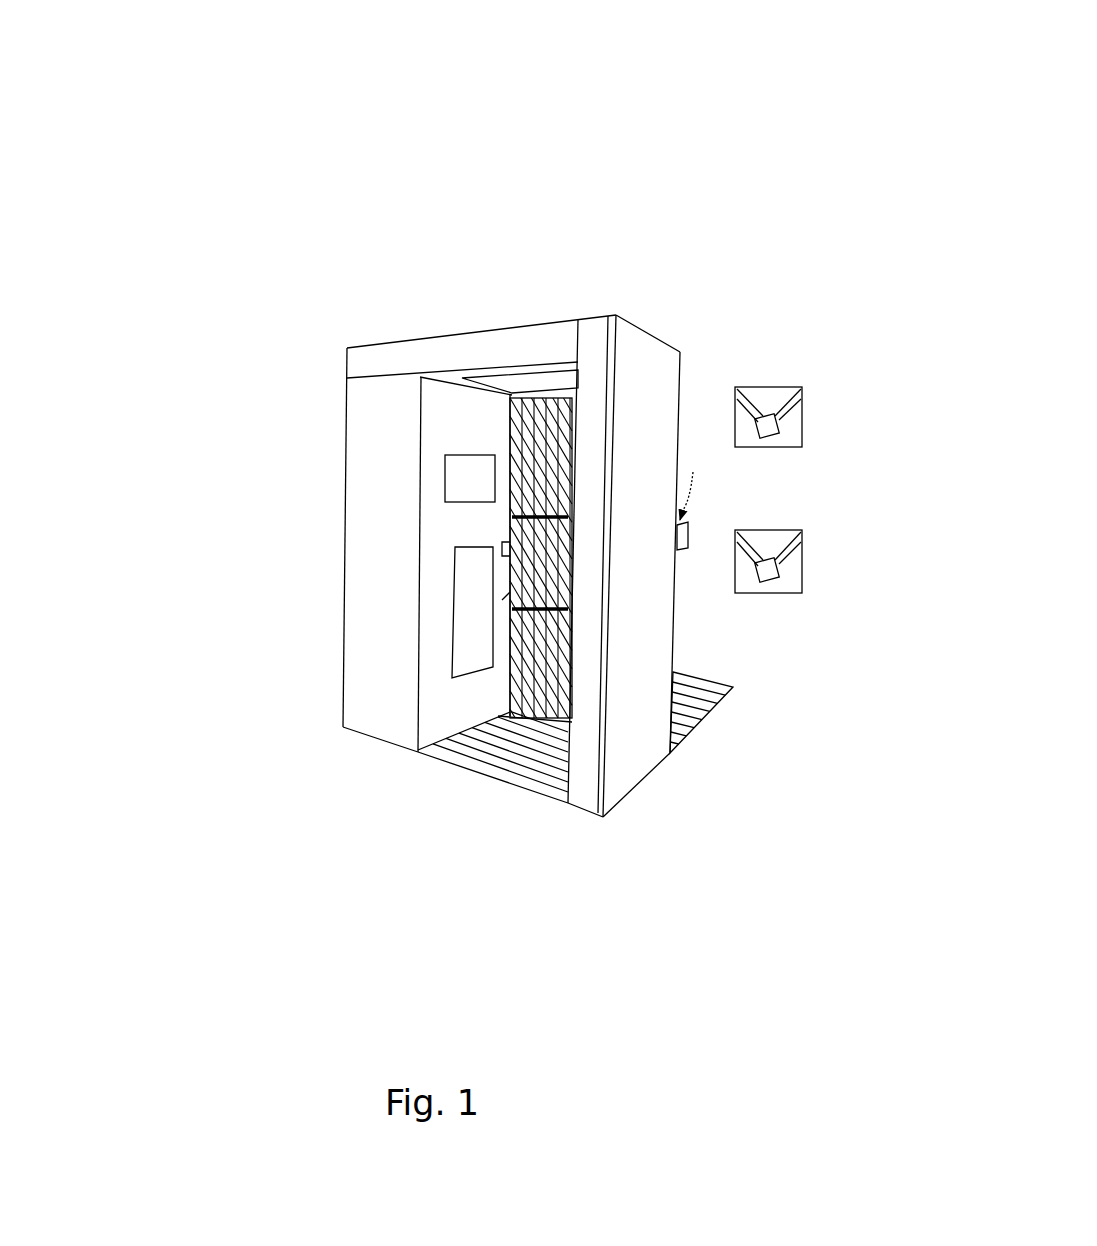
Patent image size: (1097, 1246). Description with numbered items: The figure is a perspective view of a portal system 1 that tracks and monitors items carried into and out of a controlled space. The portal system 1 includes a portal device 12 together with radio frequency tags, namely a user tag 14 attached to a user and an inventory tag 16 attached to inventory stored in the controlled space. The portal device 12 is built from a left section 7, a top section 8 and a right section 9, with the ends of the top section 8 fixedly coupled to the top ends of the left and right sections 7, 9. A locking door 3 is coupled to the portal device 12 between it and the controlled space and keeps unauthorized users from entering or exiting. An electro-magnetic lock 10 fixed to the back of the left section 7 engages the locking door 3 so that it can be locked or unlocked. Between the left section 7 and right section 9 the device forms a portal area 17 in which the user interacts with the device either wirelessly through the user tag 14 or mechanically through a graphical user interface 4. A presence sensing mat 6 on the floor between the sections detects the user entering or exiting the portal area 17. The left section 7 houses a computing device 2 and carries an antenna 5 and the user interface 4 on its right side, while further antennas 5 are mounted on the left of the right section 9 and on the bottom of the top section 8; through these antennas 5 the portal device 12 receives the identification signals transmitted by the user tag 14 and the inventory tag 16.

The portal system 1 is at (489, 522).
The computing device 2 is at (377, 692).
The locking door 3 is at (542, 448).
The user interface 4 is at (455, 485).
The antenna 5 is at (484, 845).
The presence sensing mat 6 is at (690, 718).
The left section 7 is at (446, 512).
The top section 8 is at (513, 315).
The right section 9 is at (745, 566).
The electro-magnetic lock 10 is at (508, 541).
The portal device 12 is at (489, 571).
The user tag 14 is at (794, 580).
The inventory tag 16 is at (806, 435).
The portal area 17 is at (493, 670).